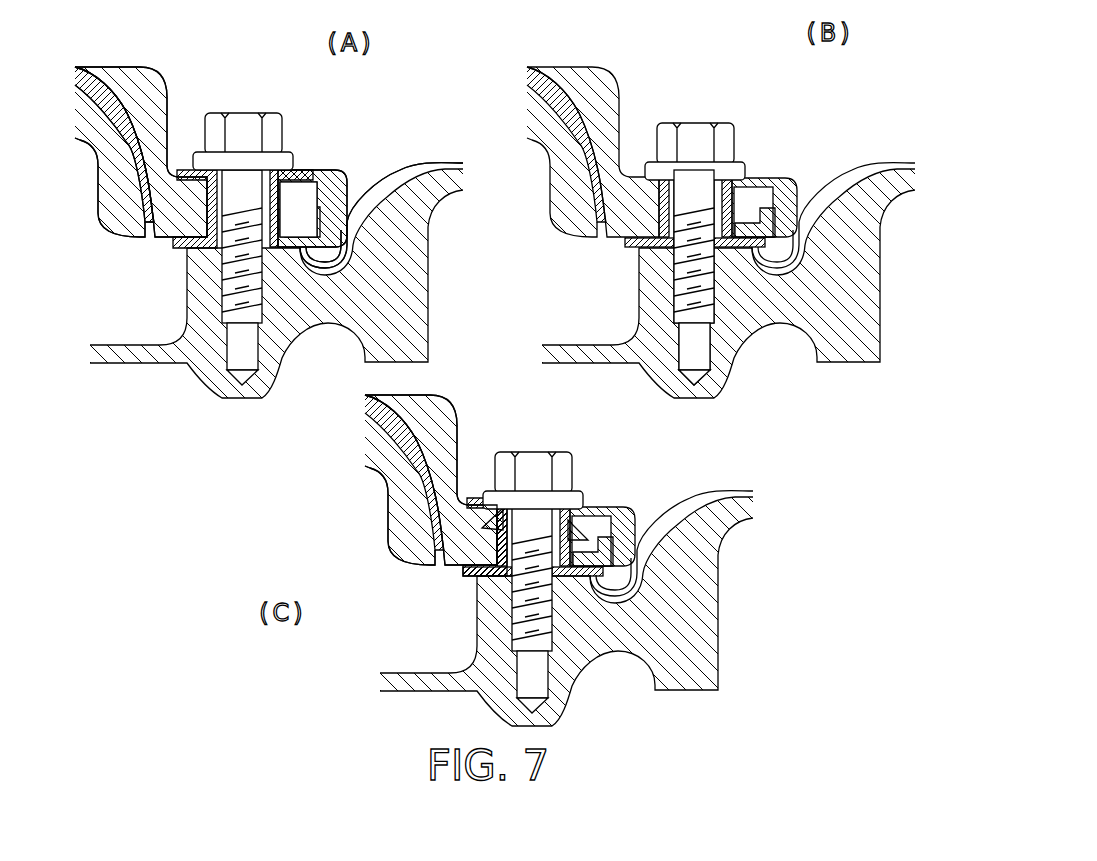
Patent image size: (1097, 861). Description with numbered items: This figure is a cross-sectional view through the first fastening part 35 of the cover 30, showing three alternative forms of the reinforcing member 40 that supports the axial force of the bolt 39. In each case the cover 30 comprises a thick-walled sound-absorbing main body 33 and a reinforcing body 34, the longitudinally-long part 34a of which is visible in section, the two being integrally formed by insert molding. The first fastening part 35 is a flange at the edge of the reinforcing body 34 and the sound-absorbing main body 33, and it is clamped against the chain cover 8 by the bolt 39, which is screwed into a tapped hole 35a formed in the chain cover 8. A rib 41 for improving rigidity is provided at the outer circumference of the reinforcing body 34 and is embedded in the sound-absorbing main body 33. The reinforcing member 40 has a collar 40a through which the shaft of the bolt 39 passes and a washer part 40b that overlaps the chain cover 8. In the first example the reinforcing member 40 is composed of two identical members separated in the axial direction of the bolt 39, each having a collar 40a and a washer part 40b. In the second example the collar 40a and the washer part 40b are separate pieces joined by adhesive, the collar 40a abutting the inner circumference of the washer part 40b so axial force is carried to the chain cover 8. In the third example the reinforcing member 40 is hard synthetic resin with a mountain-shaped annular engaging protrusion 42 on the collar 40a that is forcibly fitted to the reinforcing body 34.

The chain cover 8 is at (395, 328).
The cover 30 is at (128, 64).
The sound-absorbing main body 33 is at (130, 183).
The reinforcing body 34 is at (114, 144).
The longitudinally-long part 34a is at (113, 120).
The first fastening part 35 is at (168, 245).
The tapped hole 35a is at (250, 320).
The bolt 39 is at (242, 125).
The reinforcing member 40 is at (165, 308).
The collar 40a is at (290, 230).
The washer part 40b is at (300, 168).
The rib 41 is at (318, 215).
The annular engaging protrusion 42 is at (478, 530).